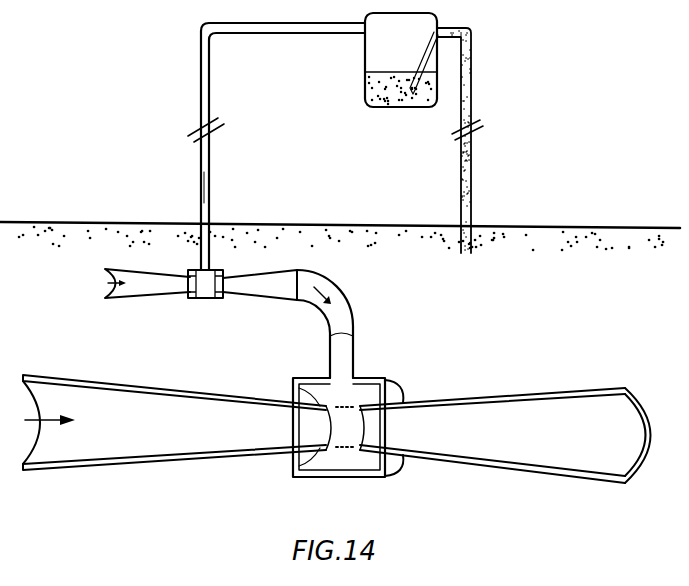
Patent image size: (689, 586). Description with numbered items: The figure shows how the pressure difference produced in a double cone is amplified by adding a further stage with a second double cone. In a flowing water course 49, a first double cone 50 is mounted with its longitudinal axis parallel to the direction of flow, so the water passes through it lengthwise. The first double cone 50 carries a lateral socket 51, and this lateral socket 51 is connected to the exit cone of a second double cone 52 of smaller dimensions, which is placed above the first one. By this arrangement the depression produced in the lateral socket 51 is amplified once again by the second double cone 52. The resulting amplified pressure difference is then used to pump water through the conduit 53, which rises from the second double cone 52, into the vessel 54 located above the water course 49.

The flowing water course 49 is at (545, 300).
The first double cone 50 is at (380, 436).
The lateral socket 51 is at (338, 342).
The second double cone 52 is at (207, 300).
The conduit 53 is at (203, 153).
The vessel 54 is at (381, 42).